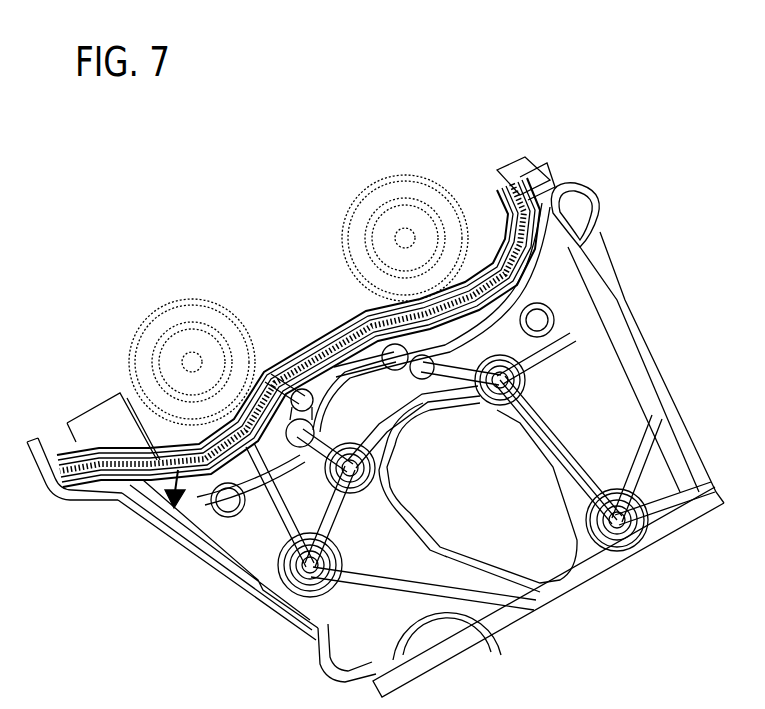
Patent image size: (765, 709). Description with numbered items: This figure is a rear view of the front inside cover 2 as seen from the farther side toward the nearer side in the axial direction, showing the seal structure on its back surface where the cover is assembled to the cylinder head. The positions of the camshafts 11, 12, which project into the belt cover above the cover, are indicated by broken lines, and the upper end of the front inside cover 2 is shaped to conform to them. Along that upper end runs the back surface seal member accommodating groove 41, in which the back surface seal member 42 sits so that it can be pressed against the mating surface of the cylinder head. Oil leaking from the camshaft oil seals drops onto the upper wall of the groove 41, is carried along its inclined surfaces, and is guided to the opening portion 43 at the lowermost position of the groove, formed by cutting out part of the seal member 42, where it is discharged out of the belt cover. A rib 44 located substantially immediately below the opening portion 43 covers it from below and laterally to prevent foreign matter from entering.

The front inside cover 2 is at (623, 405).
The camshaft 11 is at (192, 352).
The camshaft 12 is at (405, 228).
The back surface seal member accommodating groove 41 is at (537, 257).
The back surface seal member 42 is at (585, 188).
The opening portion 43 is at (150, 443).
The rib 44 is at (148, 507).